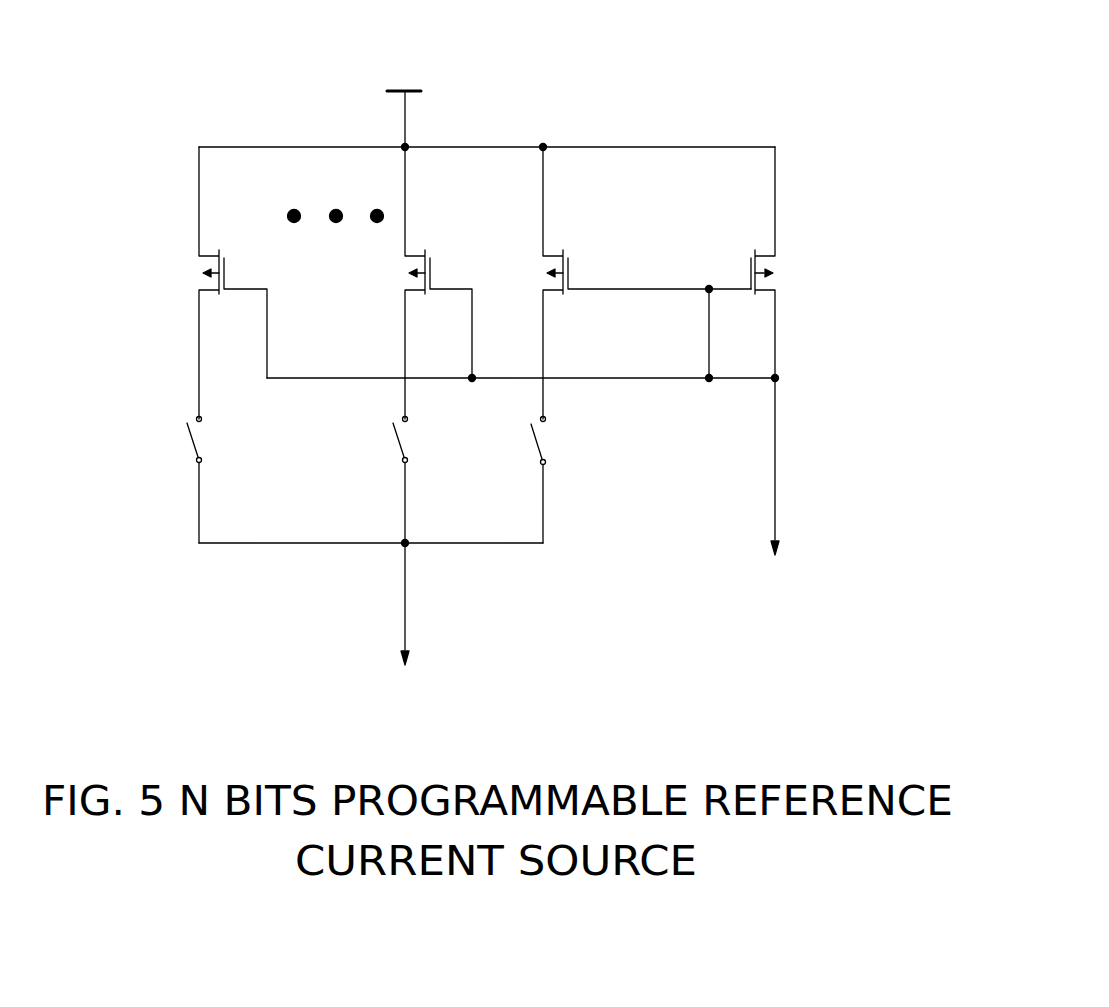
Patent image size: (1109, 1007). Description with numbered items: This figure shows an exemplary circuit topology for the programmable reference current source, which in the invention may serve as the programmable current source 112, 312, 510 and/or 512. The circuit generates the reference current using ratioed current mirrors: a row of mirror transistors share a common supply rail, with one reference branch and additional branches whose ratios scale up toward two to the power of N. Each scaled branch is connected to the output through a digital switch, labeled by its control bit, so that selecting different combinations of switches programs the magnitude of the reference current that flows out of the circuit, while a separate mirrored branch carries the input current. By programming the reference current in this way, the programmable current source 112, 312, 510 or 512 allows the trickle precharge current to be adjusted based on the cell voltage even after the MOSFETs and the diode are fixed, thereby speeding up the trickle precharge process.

The programmable current source 112 is at (489, 348).
The programmable current source 312 is at (489, 348).
The programmable current source 510 is at (489, 348).
The programmable current source 512 is at (650, 134).